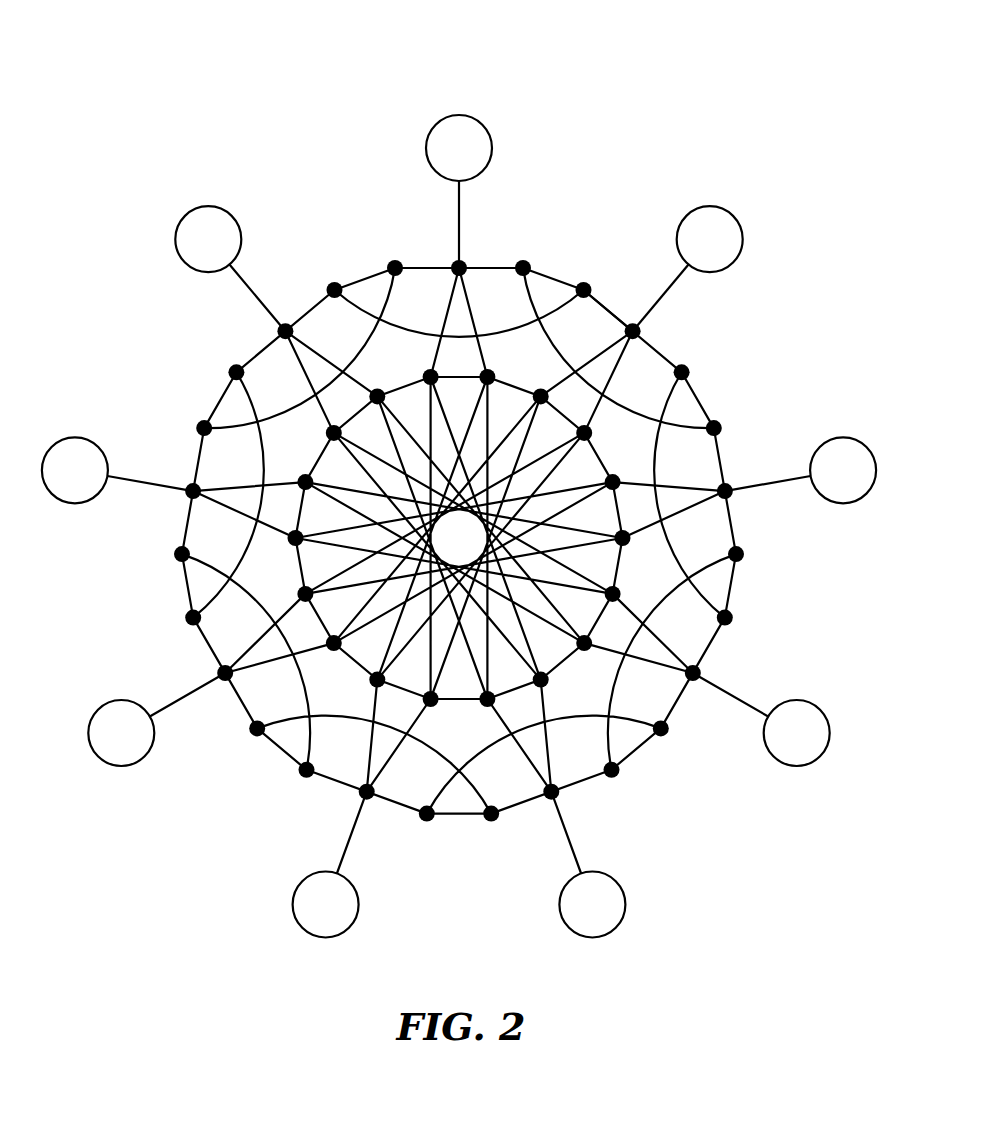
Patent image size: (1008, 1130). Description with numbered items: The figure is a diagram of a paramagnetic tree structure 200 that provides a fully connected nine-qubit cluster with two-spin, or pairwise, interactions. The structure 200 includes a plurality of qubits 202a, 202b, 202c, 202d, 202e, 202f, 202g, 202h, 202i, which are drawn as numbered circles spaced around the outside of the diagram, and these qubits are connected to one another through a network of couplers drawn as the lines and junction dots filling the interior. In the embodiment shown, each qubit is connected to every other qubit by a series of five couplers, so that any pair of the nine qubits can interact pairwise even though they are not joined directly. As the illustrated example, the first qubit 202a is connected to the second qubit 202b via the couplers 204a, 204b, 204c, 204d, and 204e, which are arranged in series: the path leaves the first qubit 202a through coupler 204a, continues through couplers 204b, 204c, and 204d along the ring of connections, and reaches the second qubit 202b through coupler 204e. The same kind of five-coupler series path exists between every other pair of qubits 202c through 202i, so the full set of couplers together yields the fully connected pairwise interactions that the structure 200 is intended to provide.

The structure 200 is at (312, 74).
The first qubit 202a is at (461, 116).
The second qubit 202b is at (727, 209).
The qubit 202c is at (847, 440).
The qubit 202d is at (815, 703).
The qubit 202e is at (623, 887).
The qubit 202f is at (359, 910).
The qubit 202g is at (124, 767).
The qubit 202h is at (84, 440).
The qubit 202i is at (222, 209).
The coupler 204a is at (457, 214).
The coupler 204b is at (498, 268).
The coupler 204c is at (555, 279).
The coupler 204d is at (607, 308).
The coupler 204e is at (668, 290).